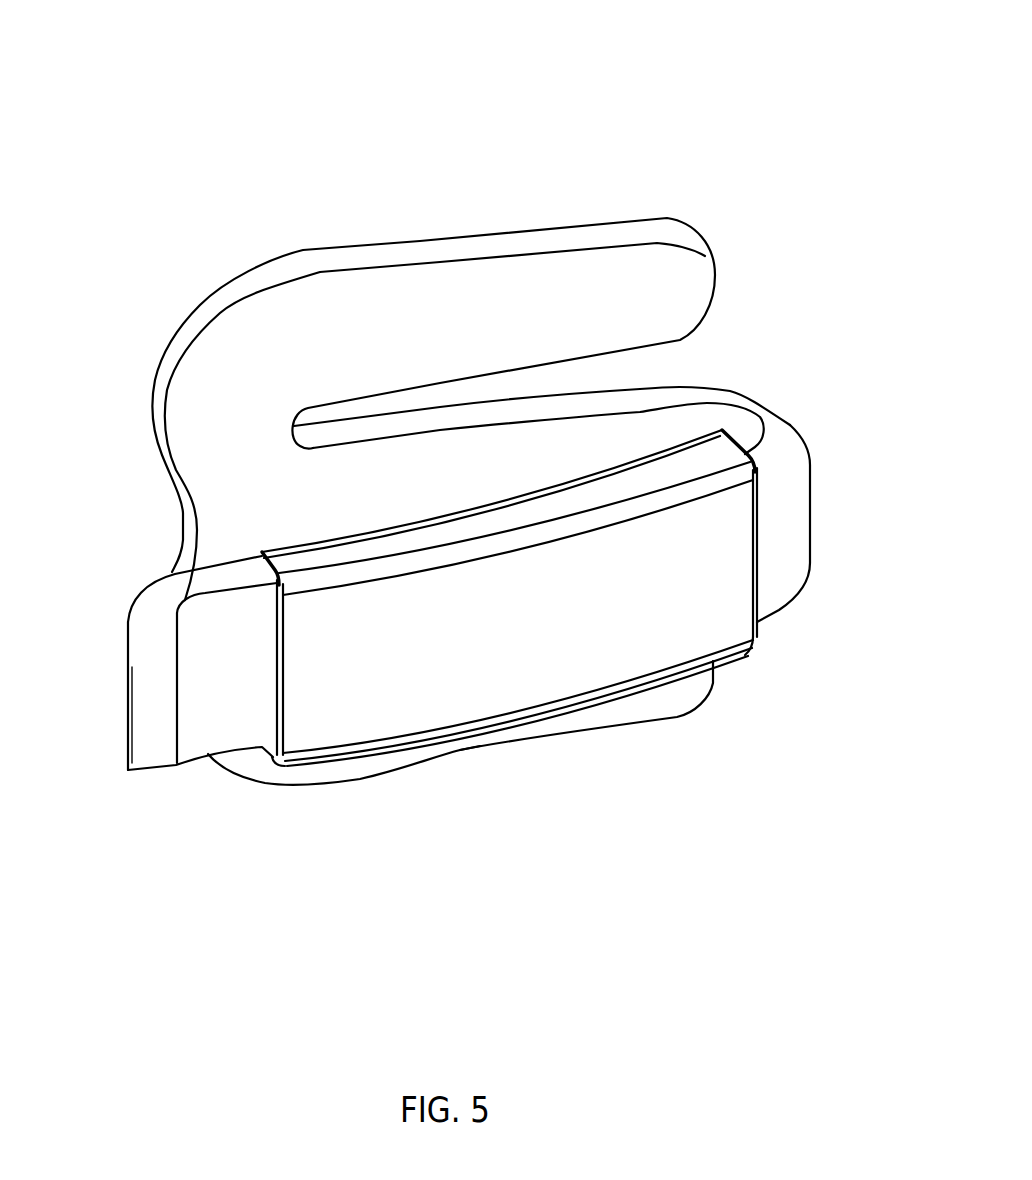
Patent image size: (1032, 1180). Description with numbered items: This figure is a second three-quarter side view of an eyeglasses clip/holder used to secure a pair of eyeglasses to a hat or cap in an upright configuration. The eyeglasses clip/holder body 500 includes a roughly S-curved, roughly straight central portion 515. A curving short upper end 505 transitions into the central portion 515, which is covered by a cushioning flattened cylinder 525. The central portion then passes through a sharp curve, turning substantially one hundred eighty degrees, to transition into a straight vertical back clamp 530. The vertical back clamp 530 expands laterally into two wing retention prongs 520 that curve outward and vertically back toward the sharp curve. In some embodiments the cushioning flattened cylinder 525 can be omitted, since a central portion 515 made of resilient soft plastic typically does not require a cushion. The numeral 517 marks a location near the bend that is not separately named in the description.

The eyeglasses clip/holder body 500 is at (205, 182).
The curving short upper end 505 is at (187, 622).
The roughly straight central portion 515 is at (510, 722).
The bend 517 is at (783, 412).
The wing retention prongs 520 is at (404, 298).
The cushioning flattened cylinder 525 is at (583, 598).
The straight vertical back clamp 530 is at (503, 405).